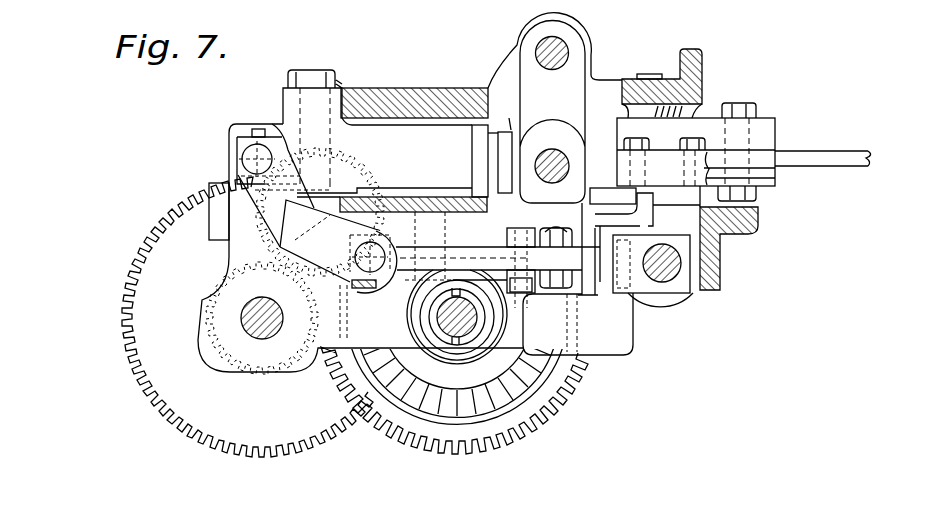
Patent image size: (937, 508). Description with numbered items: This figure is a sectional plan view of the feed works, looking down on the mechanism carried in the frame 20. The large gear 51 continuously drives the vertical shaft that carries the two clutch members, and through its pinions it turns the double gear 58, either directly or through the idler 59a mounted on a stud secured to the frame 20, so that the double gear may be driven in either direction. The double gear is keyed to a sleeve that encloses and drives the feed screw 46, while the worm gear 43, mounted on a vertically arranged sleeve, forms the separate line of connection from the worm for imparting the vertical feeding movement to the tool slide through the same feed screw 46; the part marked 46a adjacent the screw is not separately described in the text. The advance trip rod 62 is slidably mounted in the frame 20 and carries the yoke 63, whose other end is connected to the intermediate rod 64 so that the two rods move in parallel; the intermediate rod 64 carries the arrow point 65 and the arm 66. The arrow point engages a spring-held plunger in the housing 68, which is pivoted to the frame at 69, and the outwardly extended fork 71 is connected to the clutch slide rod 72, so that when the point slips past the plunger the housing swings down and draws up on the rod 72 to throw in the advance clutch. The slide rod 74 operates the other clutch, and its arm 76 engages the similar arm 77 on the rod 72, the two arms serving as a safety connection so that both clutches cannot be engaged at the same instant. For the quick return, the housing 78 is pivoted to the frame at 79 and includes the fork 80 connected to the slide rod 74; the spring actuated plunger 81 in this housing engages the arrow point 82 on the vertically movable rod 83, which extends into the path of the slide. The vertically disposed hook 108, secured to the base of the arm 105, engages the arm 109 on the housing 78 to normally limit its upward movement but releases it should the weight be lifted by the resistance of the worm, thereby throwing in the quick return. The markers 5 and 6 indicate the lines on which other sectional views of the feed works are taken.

The section line 5- 5 is at (172, 154).
The section line 6- 6 is at (182, 315).
The frame 20 is at (407, 88).
The worm gear 43 is at (575, 383).
The feed screw 46 is at (437, 311).
The hub ring 46a is at (478, 345).
The gear 51 is at (247, 317).
The double gear 58 is at (540, 410).
The idler 59a is at (360, 142).
The advance trip rod 62 is at (565, 50).
The yoke 63 is at (555, 108).
The intermediate rod 64 is at (584, 153).
The arrow point 65 is at (500, 112).
The arm 66 is at (532, 217).
The housing 68 is at (404, 157).
The pivot 69 is at (300, 119).
The fork 71 is at (235, 130).
The clutch slide rod 72 is at (241, 159).
The slide rod 74 is at (373, 250).
The arm 76 is at (329, 241).
The arm 77 is at (273, 186).
The housing 78 is at (538, 293).
The pivot 79 is at (437, 272).
The fork 80 is at (359, 302).
The spring actuated plunger 81 is at (603, 300).
The arrow point 82 is at (680, 298).
The rod 83 is at (662, 270).
The arm 105 is at (825, 152).
The hook 108 is at (600, 188).
The arm 109 is at (648, 218).